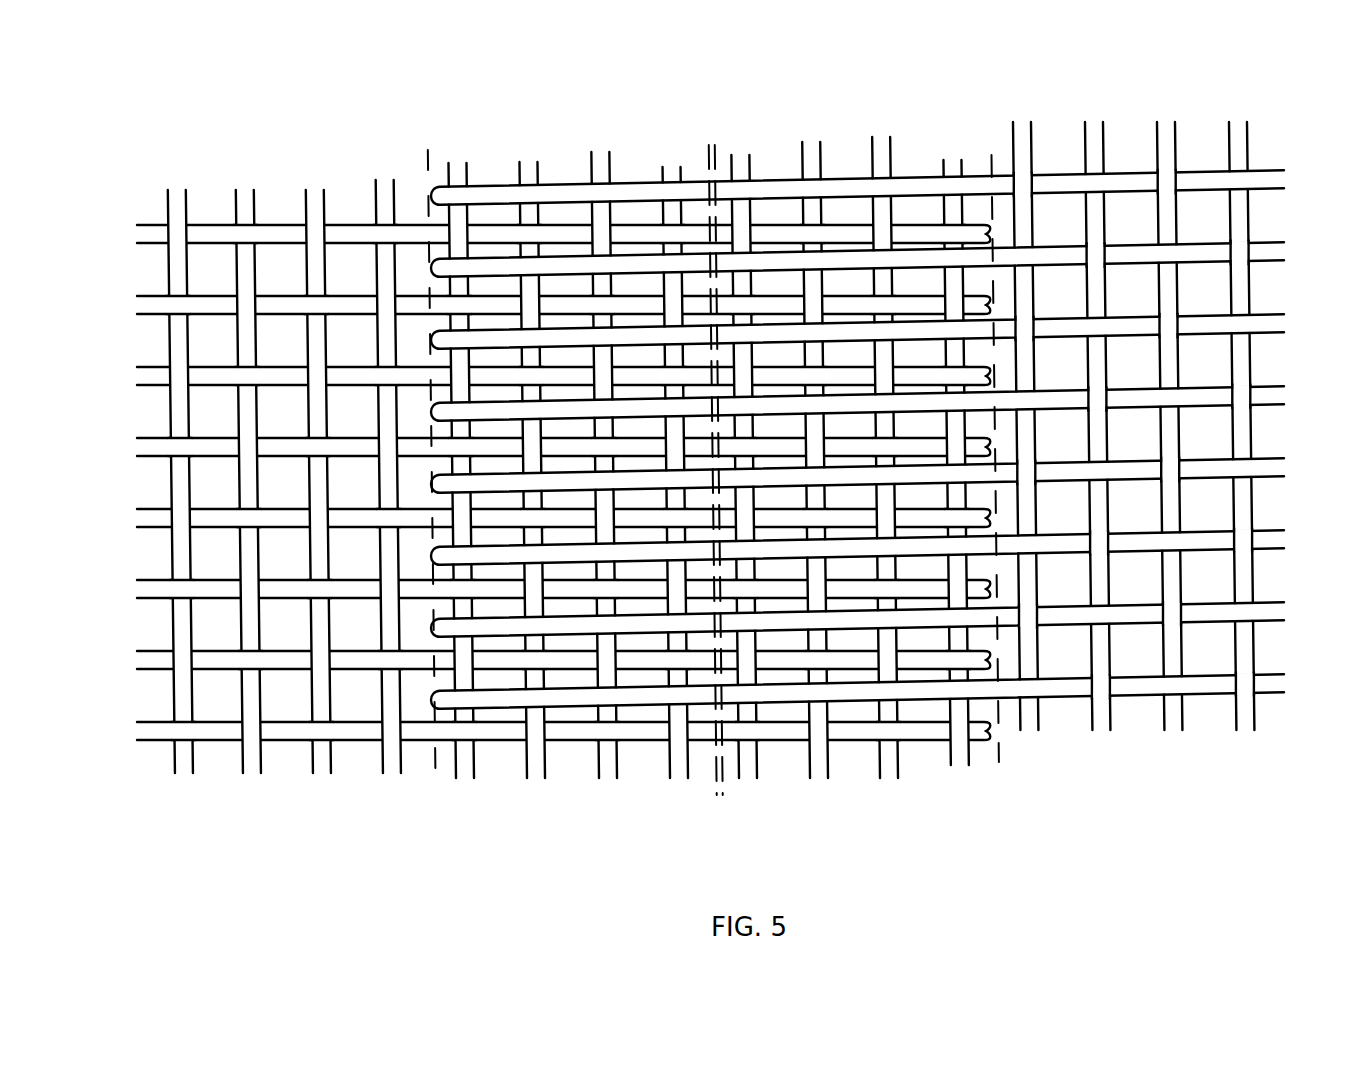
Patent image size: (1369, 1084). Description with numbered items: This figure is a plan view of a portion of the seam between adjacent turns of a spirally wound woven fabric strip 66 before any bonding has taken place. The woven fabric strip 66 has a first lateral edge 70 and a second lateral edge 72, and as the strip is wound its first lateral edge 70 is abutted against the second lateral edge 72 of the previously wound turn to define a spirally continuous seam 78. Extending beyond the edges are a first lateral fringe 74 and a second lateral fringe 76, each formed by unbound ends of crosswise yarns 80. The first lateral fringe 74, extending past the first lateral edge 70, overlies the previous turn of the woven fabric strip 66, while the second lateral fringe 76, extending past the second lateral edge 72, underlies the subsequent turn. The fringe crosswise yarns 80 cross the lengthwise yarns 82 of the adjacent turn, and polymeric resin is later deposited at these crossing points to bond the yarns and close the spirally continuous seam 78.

The woven fabric strip 66 is at (237, 672).
The first lateral edge 70 is at (717, 807).
The second lateral edge 72 is at (717, 822).
The first lateral fringe 74 is at (440, 777).
The second lateral fringe 76 is at (723, 799).
The spirally continuous seam 78 is at (445, 130).
The crosswise yarns 80 is at (155, 449).
The lengthwise yarns 82 is at (455, 173).